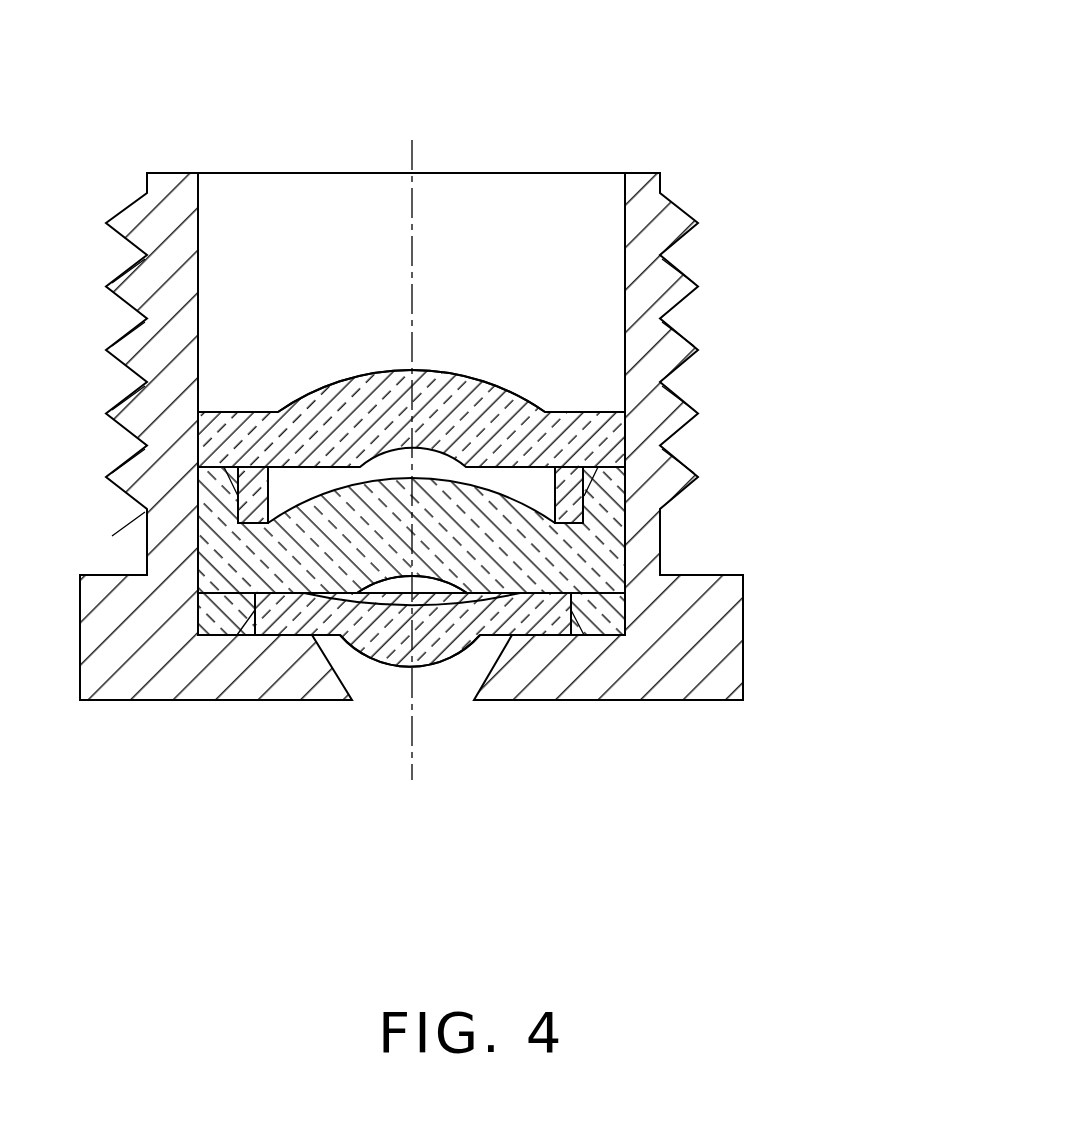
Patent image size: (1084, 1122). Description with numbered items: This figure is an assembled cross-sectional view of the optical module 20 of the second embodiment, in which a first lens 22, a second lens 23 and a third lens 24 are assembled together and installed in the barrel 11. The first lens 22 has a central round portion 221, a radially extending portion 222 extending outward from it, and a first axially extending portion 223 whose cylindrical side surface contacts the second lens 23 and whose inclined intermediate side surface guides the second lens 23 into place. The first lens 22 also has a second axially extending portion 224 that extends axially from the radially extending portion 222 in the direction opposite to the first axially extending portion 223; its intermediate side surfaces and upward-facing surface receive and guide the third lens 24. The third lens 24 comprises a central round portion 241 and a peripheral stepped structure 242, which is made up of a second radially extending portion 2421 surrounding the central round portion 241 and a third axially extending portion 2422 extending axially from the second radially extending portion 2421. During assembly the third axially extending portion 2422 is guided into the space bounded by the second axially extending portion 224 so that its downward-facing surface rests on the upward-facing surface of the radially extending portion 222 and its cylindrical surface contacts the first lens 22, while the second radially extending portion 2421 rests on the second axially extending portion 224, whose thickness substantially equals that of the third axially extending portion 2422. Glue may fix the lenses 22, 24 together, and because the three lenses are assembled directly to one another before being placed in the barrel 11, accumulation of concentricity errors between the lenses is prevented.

The barrel 11 is at (641, 672).
The optical module 20 is at (511, 410).
The first lens 22 is at (566, 559).
The second lens 23 is at (382, 665).
The third lens 24 is at (570, 385).
The central round portion 221 is at (433, 553).
The radially extending portion 222 is at (560, 522).
The first axially extending portion 223 is at (547, 630).
The second axially extending portion 224 is at (603, 512).
The central round portion 241 is at (455, 373).
The peripheral stepped structure 242 is at (570, 438).
The second radially extending portion 2421 is at (600, 422).
The third axially extending portion 2422 is at (593, 493).